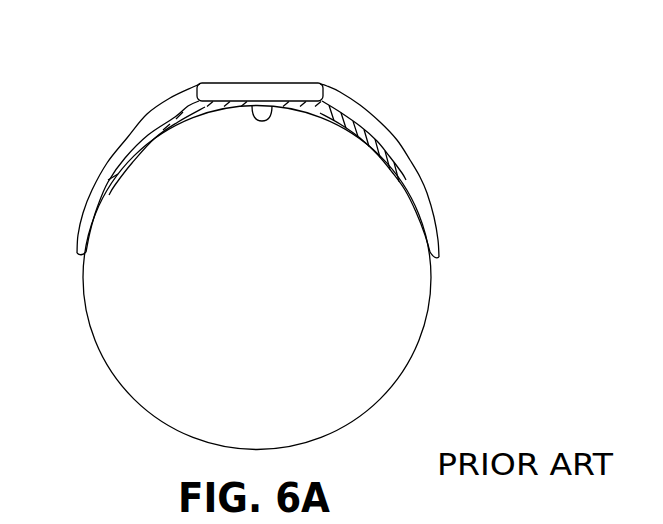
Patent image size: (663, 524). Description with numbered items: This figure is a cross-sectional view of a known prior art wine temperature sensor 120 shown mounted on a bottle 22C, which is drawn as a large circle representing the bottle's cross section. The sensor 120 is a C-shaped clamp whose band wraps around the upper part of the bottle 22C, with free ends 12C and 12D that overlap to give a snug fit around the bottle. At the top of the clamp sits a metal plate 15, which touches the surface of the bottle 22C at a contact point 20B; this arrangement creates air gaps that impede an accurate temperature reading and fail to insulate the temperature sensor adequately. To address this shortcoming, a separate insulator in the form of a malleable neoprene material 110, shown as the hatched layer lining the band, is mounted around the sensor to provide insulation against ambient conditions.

The free end of band 12D is at (130, 124).
The free end of band 12C is at (370, 112).
The metal plate 15 is at (242, 83).
The contact point 20B is at (273, 107).
The malleable neoprene material 110 is at (380, 142).
The wine temperature sensor 120 is at (468, 184).
The bottle 22C is at (427, 320).